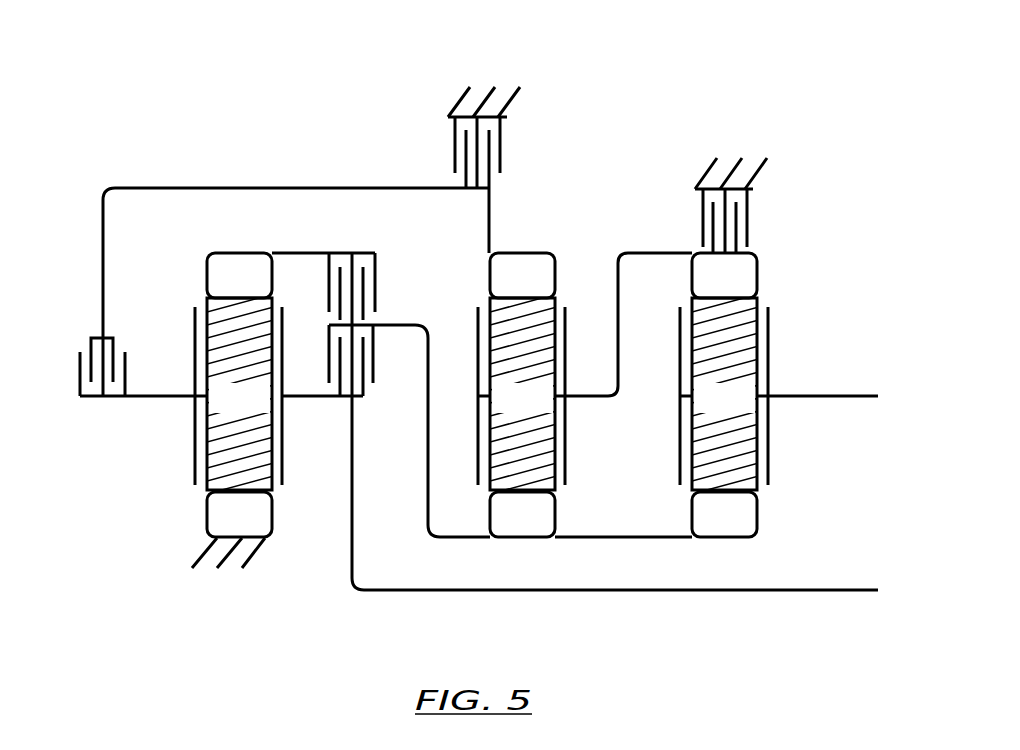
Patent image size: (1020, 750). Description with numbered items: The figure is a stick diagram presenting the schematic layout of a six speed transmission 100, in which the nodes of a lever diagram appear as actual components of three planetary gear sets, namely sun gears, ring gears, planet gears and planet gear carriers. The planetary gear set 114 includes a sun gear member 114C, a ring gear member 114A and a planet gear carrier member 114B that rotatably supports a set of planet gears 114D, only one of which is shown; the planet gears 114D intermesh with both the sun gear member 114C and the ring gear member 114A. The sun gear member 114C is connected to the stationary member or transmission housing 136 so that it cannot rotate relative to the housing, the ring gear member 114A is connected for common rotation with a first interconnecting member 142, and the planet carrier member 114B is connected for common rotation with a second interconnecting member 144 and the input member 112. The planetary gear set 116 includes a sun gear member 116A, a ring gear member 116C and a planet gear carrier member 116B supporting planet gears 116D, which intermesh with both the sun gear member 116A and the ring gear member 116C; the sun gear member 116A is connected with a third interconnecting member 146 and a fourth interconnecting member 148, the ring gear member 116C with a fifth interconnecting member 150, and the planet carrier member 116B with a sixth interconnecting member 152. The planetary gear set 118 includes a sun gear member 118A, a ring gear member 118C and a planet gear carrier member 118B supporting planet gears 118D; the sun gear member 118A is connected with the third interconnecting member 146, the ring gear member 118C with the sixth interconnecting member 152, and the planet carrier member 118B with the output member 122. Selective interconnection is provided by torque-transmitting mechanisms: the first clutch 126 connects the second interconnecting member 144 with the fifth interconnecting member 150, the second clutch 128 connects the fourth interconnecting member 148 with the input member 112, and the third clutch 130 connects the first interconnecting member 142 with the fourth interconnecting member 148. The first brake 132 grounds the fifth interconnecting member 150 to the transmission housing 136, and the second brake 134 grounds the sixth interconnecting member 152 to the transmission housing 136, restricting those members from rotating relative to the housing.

The six speed transmission 100 is at (792, 101).
The input member 112 is at (860, 592).
The planetary gear set 114 is at (230, 426).
The ring gear member 114A is at (240, 280).
The planet gear carrier member 114B is at (193, 413).
The sun gear member 114C is at (242, 513).
The planet gears 114D is at (268, 411).
The planetary gear set 116 is at (561, 426).
The sun gear member 116A is at (523, 520).
The planet gear carrier member 116B is at (567, 423).
The ring gear member 116C is at (523, 267).
The planet gears 116D is at (551, 411).
The planetary gear set 118 is at (743, 432).
The sun gear member 118A is at (727, 520).
The planet gear carrier member 118B is at (770, 330).
The ring gear member 118C is at (710, 275).
The planet gears 118D is at (753, 411).
The output member 122 is at (860, 397).
The first clutch 126 is at (80, 362).
The second clutch 128 is at (375, 357).
The third clutch 130 is at (375, 292).
The first brake 132 is at (502, 153).
The second brake 134 is at (750, 223).
The transmission housing 136 is at (513, 102).
The first interconnecting member 142 is at (295, 252).
The second interconnecting member 144 is at (165, 392).
The third interconnecting member 146 is at (660, 540).
The fourth interconnecting member 148 is at (427, 500).
The fifth interconnecting member 150 is at (278, 185).
The sixth interconnecting member 152 is at (618, 355).